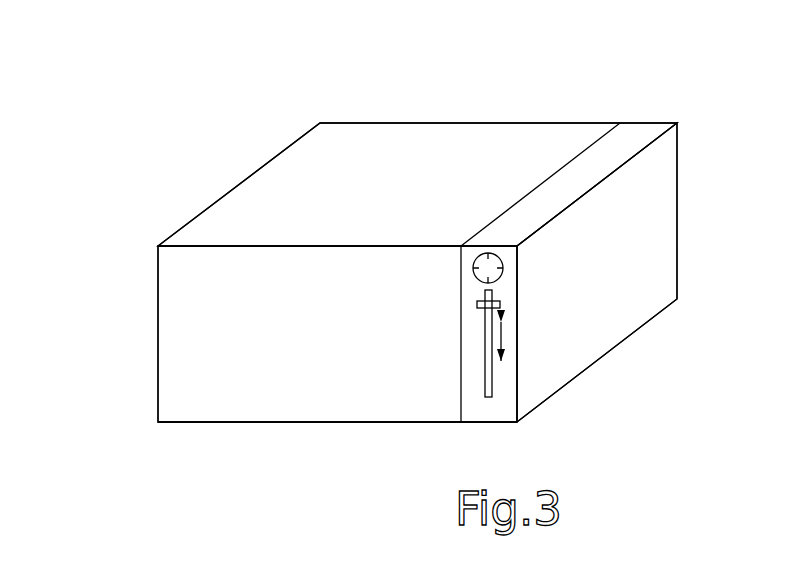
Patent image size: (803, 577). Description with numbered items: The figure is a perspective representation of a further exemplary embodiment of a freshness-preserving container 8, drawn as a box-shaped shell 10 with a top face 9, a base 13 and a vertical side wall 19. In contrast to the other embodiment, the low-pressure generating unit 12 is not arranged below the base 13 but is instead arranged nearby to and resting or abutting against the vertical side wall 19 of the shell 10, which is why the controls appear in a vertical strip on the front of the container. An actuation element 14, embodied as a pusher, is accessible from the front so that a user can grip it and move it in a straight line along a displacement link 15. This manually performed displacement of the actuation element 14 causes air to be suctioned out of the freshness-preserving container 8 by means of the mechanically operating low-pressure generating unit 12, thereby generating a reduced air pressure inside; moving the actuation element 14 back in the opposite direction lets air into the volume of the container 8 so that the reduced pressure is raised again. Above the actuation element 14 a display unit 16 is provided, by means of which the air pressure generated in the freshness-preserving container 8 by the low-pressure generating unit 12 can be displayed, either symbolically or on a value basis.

The freshness-preserving container 8 is at (160, 218).
The top wall 9 is at (330, 168).
The shell 10 is at (158, 329).
The low-pressure generating unit 12 is at (647, 115).
The base 13 is at (305, 424).
The actuation element 14 is at (503, 308).
The displacement link 15 is at (490, 382).
The display unit 16 is at (493, 250).
The vertical side wall 19 is at (459, 326).